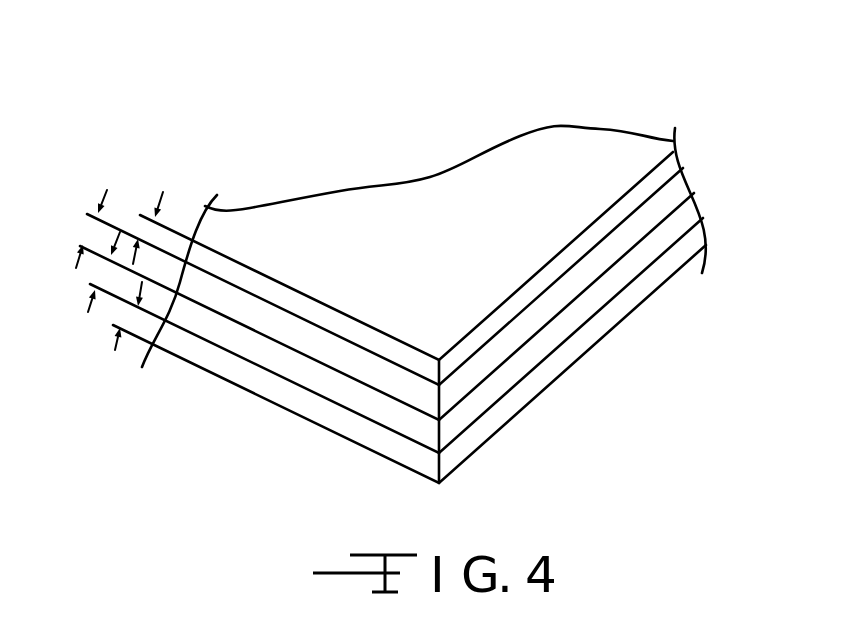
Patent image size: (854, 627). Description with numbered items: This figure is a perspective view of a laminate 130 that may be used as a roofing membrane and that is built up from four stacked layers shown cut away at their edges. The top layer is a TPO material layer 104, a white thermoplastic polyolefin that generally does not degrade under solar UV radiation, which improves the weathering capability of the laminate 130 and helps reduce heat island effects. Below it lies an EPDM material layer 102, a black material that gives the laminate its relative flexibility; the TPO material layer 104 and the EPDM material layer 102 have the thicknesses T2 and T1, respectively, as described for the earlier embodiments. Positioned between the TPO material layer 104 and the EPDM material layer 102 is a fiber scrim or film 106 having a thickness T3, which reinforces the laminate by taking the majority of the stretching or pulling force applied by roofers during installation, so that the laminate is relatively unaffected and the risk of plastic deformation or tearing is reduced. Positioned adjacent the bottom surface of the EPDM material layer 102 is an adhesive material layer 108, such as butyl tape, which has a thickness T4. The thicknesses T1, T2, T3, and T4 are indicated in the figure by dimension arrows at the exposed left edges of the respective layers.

The laminate 130 is at (450, 251).
The TPO material layer 104 is at (663, 176).
The fiber scrim or film 106 is at (672, 198).
The EPDM material layer 102 is at (688, 223).
The adhesive material layer 108 is at (595, 328).
The thickness of EPDM layer T1 is at (100, 268).
The thickness of TPO layer T2 is at (140, 233).
The thickness of fiber scrim or film T3 is at (90, 228).
The thickness of adhesive material layer T4 is at (128, 316).